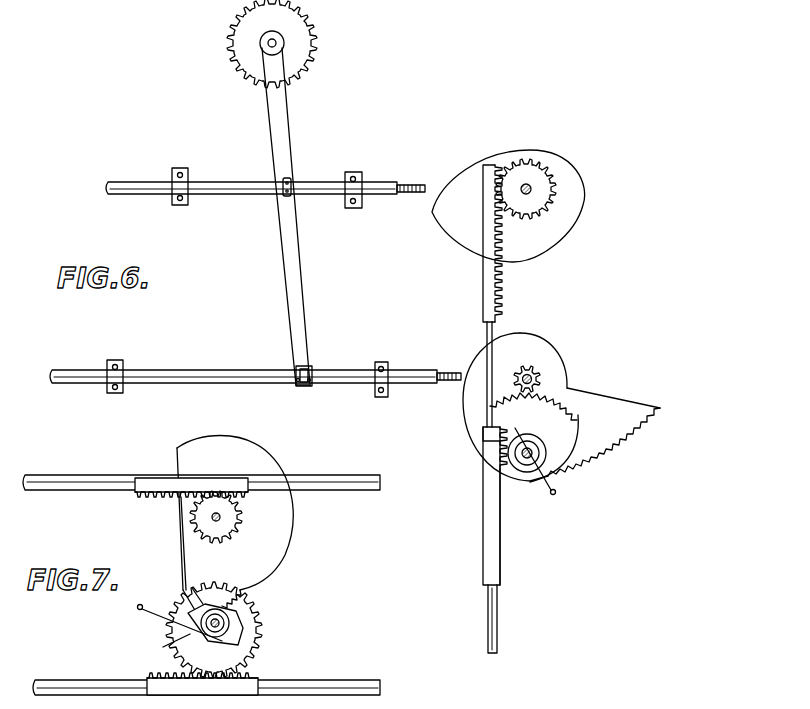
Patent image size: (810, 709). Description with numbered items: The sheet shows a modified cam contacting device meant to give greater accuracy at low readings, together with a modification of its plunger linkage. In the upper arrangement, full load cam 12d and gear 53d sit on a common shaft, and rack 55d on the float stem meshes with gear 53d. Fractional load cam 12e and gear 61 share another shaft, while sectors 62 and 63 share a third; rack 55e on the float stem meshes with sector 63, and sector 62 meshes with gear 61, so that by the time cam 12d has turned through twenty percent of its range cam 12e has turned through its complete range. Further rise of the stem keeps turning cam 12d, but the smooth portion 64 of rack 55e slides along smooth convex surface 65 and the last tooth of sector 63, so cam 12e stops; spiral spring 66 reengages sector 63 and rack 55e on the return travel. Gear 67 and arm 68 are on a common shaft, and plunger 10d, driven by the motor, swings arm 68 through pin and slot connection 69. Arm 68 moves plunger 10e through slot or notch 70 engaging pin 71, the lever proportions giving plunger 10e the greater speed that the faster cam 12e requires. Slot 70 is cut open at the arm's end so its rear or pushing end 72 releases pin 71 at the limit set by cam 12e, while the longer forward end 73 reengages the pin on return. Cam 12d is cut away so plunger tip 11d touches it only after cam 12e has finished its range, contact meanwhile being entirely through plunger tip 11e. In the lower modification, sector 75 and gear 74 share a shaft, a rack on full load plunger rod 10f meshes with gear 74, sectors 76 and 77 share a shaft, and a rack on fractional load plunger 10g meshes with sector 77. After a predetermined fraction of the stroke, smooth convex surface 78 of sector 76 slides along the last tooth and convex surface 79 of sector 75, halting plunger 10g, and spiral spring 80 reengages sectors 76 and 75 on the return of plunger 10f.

In FIG. 6, the gear 67 is at (302, 46).
In FIG. 6, the arm 68 is at (279, 124).
In FIG. 6, the pin and slot connection 69 is at (292, 181).
In FIG. 6, the plunger 10d is at (217, 181).
In FIG. 6, the plunger tip 11d is at (412, 183).
In FIG. 6, the full load cam 12d is at (567, 220).
In FIG. 6, the gear 53d is at (545, 183).
In FIG. 6, the rack 55d is at (500, 292).
In FIG. 6, the plunger 10e is at (322, 375).
In FIG. 6, the plunger tip 11e is at (448, 372).
In FIG. 6, the slot or notch 70 is at (311, 368).
In FIG. 6, the pin 71 is at (303, 385).
In FIG. 6, the rear or pushing end 72 is at (296, 383).
In FIG. 6, the forward end 73 is at (310, 384).
In FIG. 6, the fractional load cam 12e is at (603, 442).
In FIG. 6, the gear 61 is at (540, 376).
In FIG. 6, the sector 62 is at (565, 408).
In FIG. 6, the sector 63 is at (497, 438).
In FIG. 6, the rack 55e is at (498, 465).
In FIG. 6, the smooth portion 64 is at (500, 528).
In FIG. 6, the smooth convex surface 65 is at (519, 478).
In FIG. 6, the spiral spring 66 is at (535, 459).
In FIG. 7, the convex surface 79 is at (284, 558).
In FIG. 7, the full load plunger rod 10f is at (120, 478).
In FIG. 7, the gear 74 is at (190, 519).
In FIG. 7, the sector 75 is at (184, 545).
In FIG. 7, the sector 76 is at (200, 610).
In FIG. 7, the sector 77 is at (250, 650).
In FIG. 7, the smooth convex surface 78 is at (243, 626).
In FIG. 7, the spiral spring 80 is at (188, 638).
In FIG. 7, the fractional load plunger 10g is at (68, 678).